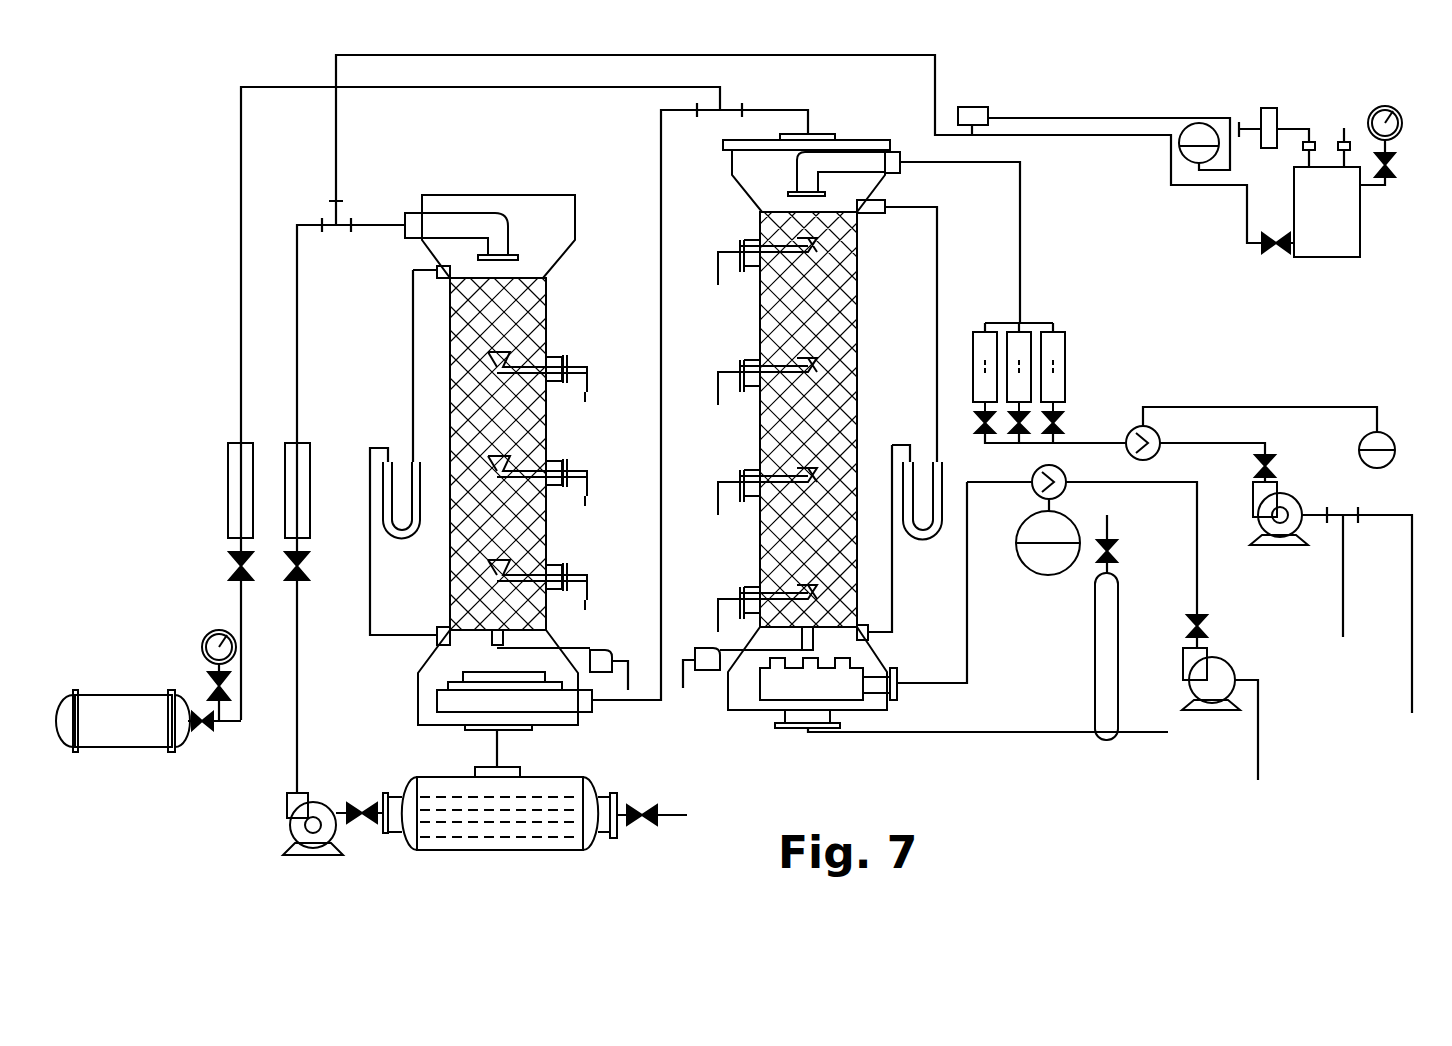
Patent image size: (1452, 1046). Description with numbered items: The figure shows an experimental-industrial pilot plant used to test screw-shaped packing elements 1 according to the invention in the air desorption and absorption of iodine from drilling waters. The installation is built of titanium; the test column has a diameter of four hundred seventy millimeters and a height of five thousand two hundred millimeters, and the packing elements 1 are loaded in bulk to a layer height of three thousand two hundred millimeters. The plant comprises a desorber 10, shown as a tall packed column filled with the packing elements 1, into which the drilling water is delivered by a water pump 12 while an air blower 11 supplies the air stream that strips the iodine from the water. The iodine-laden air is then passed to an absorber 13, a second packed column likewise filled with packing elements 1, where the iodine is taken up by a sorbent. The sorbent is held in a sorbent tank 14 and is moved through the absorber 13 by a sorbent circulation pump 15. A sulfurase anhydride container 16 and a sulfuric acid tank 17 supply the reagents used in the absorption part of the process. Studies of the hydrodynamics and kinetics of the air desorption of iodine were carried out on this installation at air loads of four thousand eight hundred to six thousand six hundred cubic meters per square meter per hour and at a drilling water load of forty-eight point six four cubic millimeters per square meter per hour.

The packing elements 1 is at (813, 323).
The desorber 10 is at (857, 261).
The air blower 11 is at (1223, 657).
The water pump 12 is at (1287, 490).
The absorber 13 is at (533, 335).
The sorbent tank 14 is at (592, 785).
The sorbent circulation pump 15 is at (322, 802).
The sulfurase anhydride container 16 is at (107, 695).
The sulfuric acid tank 17 is at (1360, 237).